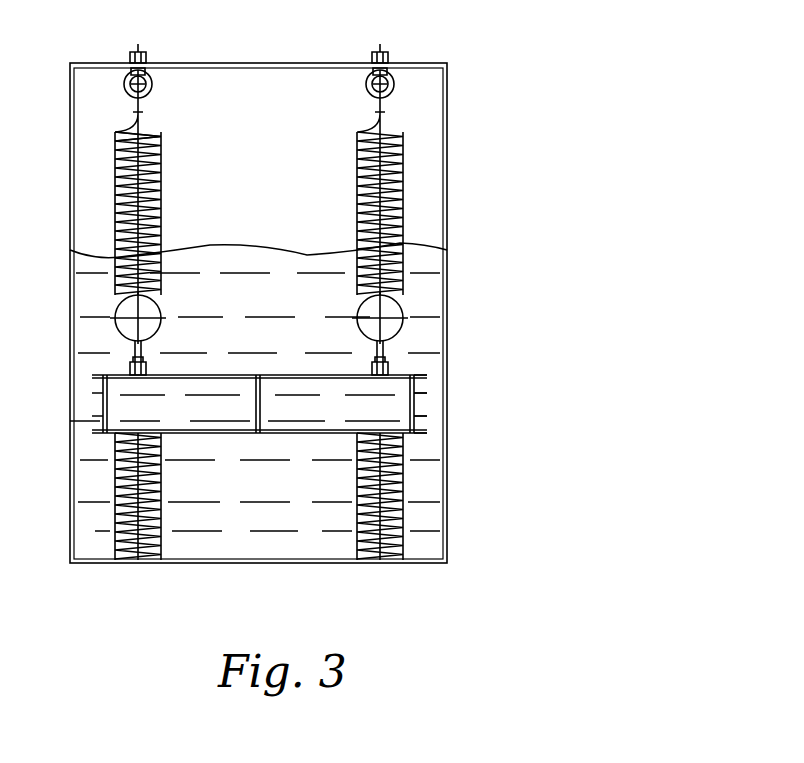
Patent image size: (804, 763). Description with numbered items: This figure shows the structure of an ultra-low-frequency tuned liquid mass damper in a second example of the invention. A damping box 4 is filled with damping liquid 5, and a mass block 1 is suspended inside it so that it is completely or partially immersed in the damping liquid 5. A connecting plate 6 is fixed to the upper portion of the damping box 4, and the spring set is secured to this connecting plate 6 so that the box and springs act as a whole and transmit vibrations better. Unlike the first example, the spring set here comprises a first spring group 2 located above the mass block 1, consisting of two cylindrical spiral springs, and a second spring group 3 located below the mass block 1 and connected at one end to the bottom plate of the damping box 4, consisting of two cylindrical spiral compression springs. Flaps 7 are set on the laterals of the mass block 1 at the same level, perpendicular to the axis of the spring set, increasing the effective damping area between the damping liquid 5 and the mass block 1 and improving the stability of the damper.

The mass block 1 is at (283, 424).
The first spring group 2 is at (316, 236).
The second spring group 3 is at (294, 522).
The damping box 4 is at (303, 313).
The damping liquid 5 is at (285, 382).
The connecting plate 6 is at (312, 53).
The flaps 7 is at (427, 375).